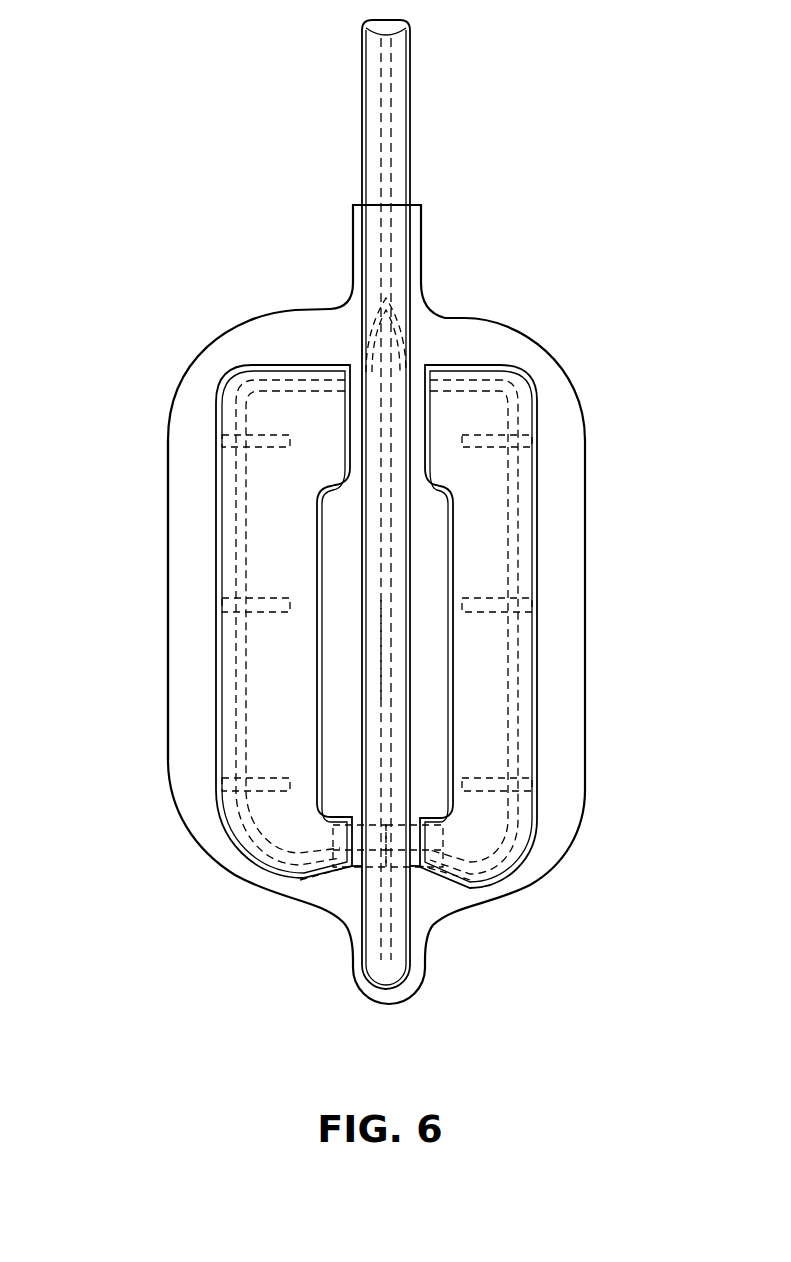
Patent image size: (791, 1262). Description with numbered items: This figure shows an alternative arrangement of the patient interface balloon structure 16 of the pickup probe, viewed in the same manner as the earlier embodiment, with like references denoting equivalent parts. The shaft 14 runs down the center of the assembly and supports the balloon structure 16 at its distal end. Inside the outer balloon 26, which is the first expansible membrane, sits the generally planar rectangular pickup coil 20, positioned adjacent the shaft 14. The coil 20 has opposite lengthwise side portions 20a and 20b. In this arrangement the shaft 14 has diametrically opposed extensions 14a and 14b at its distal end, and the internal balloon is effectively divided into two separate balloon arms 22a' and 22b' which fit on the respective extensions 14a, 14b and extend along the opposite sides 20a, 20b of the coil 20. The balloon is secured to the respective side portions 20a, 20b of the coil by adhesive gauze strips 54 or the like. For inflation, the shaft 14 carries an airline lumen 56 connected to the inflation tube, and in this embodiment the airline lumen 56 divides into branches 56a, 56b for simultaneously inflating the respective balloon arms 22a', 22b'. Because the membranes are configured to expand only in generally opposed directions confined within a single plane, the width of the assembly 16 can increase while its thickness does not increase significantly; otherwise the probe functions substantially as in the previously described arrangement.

The shaft 14 is at (362, 140).
The balloon structure 16 is at (142, 678).
The pickup coil 20 is at (425, 365).
The lengthwise side portion of coil 20a is at (235, 556).
The lengthwise side portion of coil 20b is at (538, 554).
The balloon arm 22a' is at (216, 621).
The balloon arm 22b' is at (556, 626).
The outer balloon 26 is at (168, 757).
The adhesive gauze strips 54 is at (262, 437).
The airline lumen 56 is at (398, 642).
The extension 14a is at (333, 842).
The extension 14b is at (445, 840).
The airline lumen branch 56a is at (345, 878).
The airline lumen branch 56b is at (440, 880).